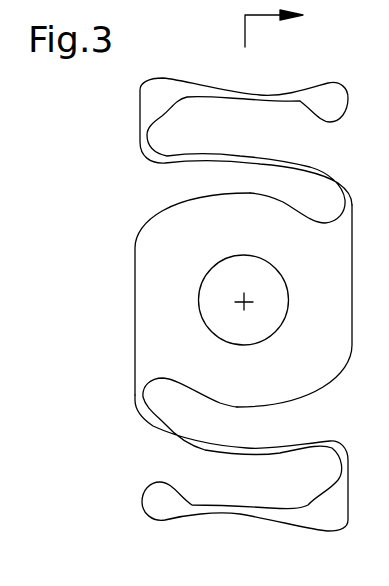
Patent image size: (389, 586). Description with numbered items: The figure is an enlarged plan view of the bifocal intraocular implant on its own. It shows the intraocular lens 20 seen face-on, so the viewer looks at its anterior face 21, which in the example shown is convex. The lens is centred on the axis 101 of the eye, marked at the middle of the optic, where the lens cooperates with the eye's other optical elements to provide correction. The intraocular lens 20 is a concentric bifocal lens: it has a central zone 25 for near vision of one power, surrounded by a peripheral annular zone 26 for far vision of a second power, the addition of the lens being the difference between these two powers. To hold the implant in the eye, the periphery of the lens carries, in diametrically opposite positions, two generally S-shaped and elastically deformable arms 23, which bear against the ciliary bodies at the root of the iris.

The intraocular lens 20 is at (101, 357).
The anterior face 21 is at (141, 300).
The arms 23 is at (140, 133).
The central zone 25 is at (258, 286).
The peripheral annular zone 26 is at (253, 237).
The axis 101 is at (247, 302).